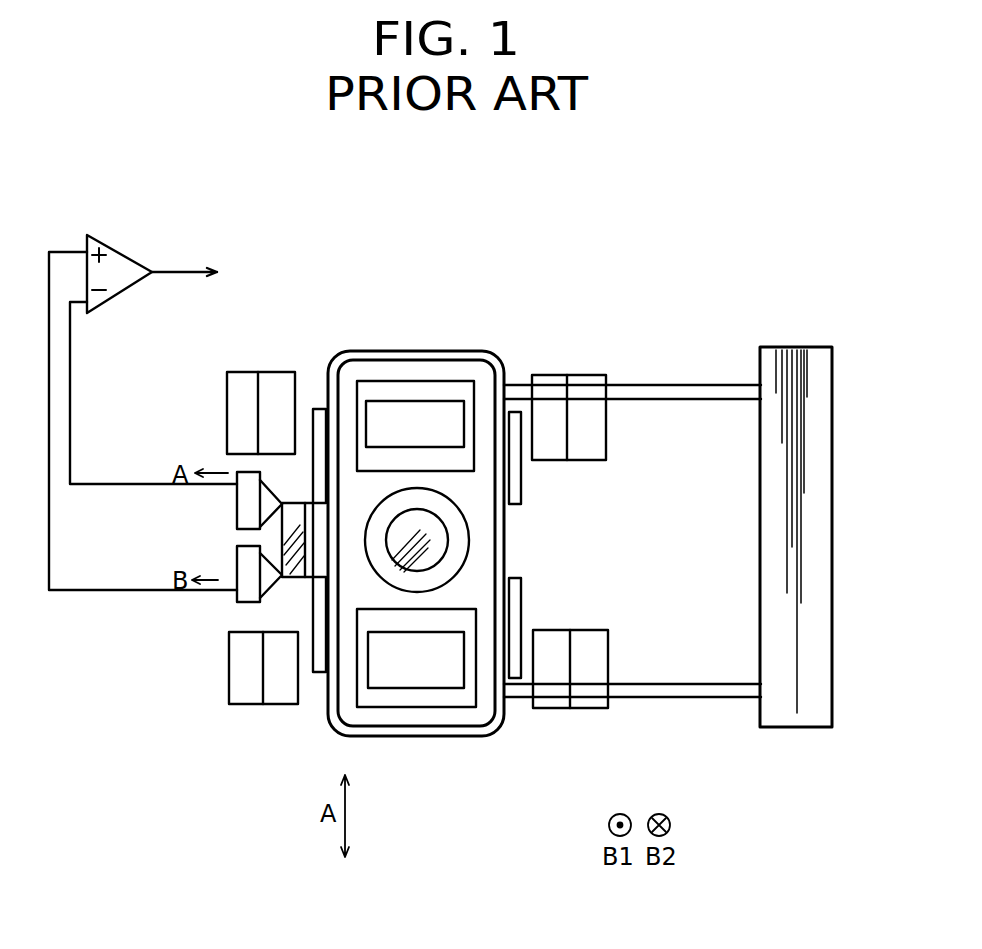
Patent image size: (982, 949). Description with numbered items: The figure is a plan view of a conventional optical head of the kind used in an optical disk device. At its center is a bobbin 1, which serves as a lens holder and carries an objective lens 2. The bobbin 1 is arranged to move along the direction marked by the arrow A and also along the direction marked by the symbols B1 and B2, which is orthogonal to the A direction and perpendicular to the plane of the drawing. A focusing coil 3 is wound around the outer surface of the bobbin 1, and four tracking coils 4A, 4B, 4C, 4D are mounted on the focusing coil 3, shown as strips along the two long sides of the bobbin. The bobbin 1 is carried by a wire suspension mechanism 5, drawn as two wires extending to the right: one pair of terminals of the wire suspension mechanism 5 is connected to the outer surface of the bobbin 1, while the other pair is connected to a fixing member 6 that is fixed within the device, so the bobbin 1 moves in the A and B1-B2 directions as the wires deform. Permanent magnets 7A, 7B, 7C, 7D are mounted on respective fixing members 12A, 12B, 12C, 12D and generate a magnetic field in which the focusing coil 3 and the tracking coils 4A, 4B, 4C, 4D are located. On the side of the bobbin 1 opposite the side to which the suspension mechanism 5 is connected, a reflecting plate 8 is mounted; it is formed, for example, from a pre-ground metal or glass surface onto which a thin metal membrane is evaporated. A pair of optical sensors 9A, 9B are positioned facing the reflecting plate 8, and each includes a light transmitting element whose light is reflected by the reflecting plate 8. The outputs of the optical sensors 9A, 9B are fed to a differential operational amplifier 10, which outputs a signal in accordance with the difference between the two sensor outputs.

The bobbin 1 is at (492, 723).
The objective lens 2 is at (432, 520).
The focusing coil 3 is at (362, 358).
The tracking coil 4A is at (521, 485).
The tracking coil 4B is at (320, 409).
The tracking coil 4C is at (322, 672).
The tracking coil 4D is at (522, 585).
The wire suspension mechanism 5 is at (703, 385).
The fixing member 6 is at (782, 728).
The permanent magnet 7A is at (556, 453).
The permanent magnet 7B is at (277, 372).
The permanent magnet 7C is at (275, 638).
The permanent magnet 7D is at (552, 635).
The reflecting plate 8 is at (303, 582).
The optical sensor 9A is at (237, 515).
The optical sensor 9B is at (237, 562).
The differential operational amplifier 10 is at (122, 248).
The fixing member 12A is at (592, 375).
The fixing member 12B is at (228, 392).
The fixing member 12C is at (237, 688).
The fixing member 12D is at (605, 640).